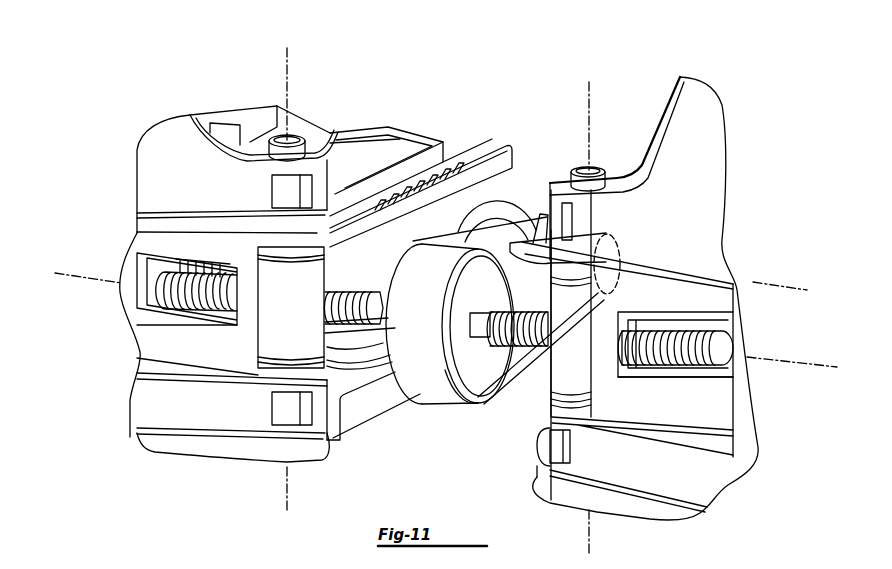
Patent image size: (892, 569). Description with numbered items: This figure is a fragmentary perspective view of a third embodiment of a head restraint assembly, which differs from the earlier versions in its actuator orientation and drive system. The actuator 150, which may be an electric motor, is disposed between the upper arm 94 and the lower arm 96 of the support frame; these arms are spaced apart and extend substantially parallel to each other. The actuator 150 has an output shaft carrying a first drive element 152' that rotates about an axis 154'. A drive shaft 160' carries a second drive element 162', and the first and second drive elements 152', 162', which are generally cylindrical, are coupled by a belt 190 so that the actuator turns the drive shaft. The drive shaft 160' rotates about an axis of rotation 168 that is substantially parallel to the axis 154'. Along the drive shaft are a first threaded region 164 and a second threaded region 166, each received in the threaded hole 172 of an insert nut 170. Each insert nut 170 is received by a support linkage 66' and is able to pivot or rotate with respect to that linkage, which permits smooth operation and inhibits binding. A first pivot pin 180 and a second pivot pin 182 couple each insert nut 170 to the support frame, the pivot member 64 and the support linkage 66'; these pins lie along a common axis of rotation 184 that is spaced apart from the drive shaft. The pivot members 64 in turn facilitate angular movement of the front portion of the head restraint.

The pivot member 64 is at (170, 143).
The support linkage 66' is at (435, 373).
The upper arm 94 is at (413, 145).
The lower arm 96 is at (372, 411).
The actuator 150 is at (520, 203).
The first drive element 152' is at (641, 253).
The axis 154' is at (778, 248).
The drive shaft 160' is at (470, 338).
The second drive element 162' is at (490, 406).
The first threaded region 164 is at (198, 296).
The second threaded region 166 is at (685, 347).
The axis of rotation 168 is at (780, 357).
The insert nut 170 is at (272, 345).
The threaded hole 172 is at (322, 313).
The first pivot pin 180 is at (292, 137).
The second pivot pin 182 is at (298, 410).
The axis of rotation 184 is at (287, 64).
The belt 190 is at (424, 310).